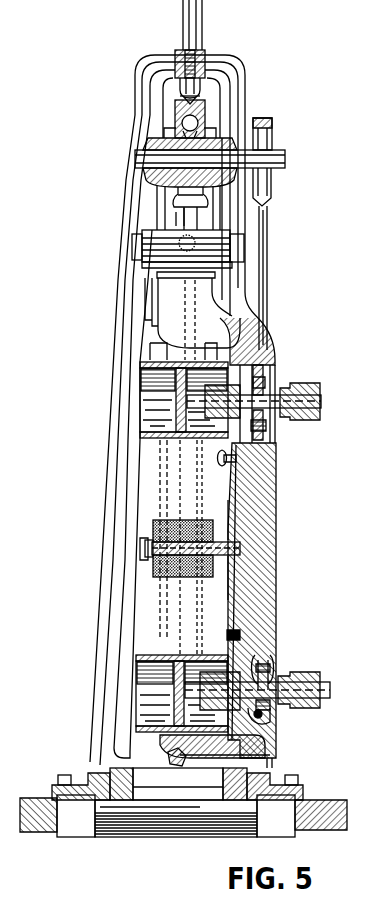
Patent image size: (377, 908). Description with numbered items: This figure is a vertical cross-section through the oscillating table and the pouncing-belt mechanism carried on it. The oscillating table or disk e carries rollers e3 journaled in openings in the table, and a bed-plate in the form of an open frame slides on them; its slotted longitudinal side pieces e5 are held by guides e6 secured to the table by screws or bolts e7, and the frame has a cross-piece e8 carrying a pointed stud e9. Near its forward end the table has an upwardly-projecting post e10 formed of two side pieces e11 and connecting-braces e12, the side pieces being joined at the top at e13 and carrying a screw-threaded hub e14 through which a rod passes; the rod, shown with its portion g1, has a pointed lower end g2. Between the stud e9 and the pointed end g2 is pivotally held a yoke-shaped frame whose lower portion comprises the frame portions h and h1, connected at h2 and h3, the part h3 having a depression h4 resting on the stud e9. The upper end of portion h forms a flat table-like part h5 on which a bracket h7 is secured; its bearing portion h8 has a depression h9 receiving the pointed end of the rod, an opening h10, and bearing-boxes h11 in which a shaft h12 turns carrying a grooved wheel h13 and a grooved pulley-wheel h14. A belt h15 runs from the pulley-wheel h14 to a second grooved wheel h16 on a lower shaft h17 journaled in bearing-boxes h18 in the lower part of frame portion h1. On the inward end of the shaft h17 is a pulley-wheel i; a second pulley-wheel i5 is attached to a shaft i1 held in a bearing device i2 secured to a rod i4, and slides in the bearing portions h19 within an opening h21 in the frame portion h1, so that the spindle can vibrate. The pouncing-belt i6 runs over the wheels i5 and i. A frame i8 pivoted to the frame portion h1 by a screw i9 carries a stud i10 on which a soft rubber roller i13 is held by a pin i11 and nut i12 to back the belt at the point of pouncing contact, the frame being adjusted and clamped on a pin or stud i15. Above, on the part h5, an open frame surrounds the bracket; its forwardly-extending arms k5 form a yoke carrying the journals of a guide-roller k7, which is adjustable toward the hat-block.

The oscillating table or disk e is at (44, 832).
The roller e3 is at (165, 838).
The longitudinal side pieces e5 is at (115, 772).
The guides e6 is at (288, 780).
The screws or bolts e7 is at (60, 780).
The cross-piece e8 is at (178, 784).
The pivot or pointed stud e9 is at (210, 782).
The post or support e10 is at (167, 438).
The side pieces e11 is at (246, 112).
The connecting-braces e12 is at (150, 345).
The top connection of side pieces e13 is at (168, 66).
The screw-threaded hub e14 is at (205, 60).
The spindle g1 is at (203, 90).
The pointed end of rod g2 is at (185, 100).
The frame portion h is at (183, 359).
The frame portion h1 is at (277, 485).
The connection h2 is at (194, 320).
The connecting part h3 is at (276, 746).
The depression h4 is at (168, 758).
The flat table-like part h5 is at (192, 313).
The bracket h7 is at (180, 228).
The bearing portion h8 is at (206, 130).
The depression h9 is at (203, 97).
The opening h10 is at (176, 122).
The bearing-boxes h11 is at (178, 176).
The shaft or spindle h12 is at (135, 159).
The grooved wheel h13 is at (180, 196).
The grooved pulley-wheel h14 is at (272, 136).
The belt h15 is at (269, 224).
The second grooved wheel h16 is at (270, 682).
The shaft or spindle h17 is at (300, 694).
The bearing-boxes h18 is at (292, 696).
The bearing portions h19 is at (264, 372).
The opening h21 is at (272, 382).
The pulley-wheel i is at (150, 722).
The shaft or spindle i1 is at (322, 403).
The bearing device i2 is at (266, 395).
The rod i4 is at (266, 424).
The second pulley-wheel i5 is at (150, 428).
The pouncing-belt i6 is at (150, 472).
The frame i8 is at (229, 506).
The screw i9 is at (228, 634).
The stud i10 is at (150, 566).
The pin i11 is at (170, 540).
The nut i12 is at (142, 546).
The roller i13 is at (166, 578).
The pin or stud i15 is at (221, 458).
The forwardly-extending arms k5 is at (132, 255).
The guide-roller k7 is at (155, 241).